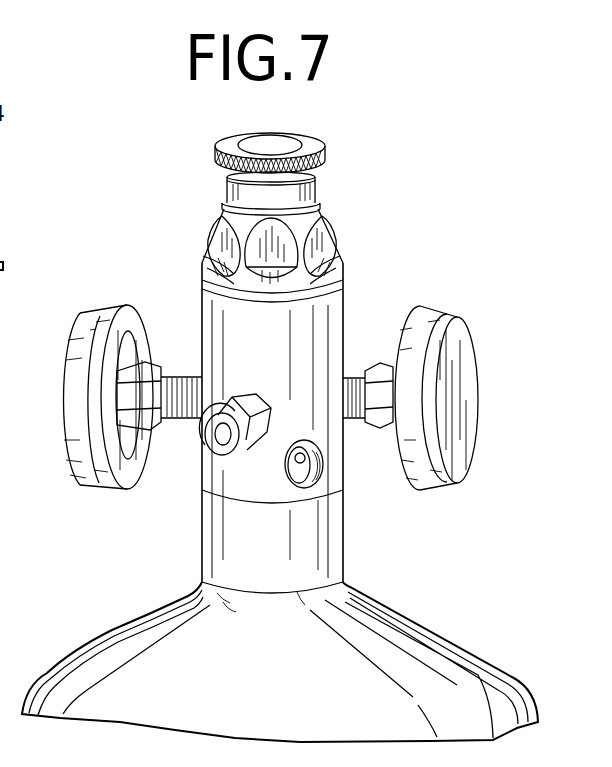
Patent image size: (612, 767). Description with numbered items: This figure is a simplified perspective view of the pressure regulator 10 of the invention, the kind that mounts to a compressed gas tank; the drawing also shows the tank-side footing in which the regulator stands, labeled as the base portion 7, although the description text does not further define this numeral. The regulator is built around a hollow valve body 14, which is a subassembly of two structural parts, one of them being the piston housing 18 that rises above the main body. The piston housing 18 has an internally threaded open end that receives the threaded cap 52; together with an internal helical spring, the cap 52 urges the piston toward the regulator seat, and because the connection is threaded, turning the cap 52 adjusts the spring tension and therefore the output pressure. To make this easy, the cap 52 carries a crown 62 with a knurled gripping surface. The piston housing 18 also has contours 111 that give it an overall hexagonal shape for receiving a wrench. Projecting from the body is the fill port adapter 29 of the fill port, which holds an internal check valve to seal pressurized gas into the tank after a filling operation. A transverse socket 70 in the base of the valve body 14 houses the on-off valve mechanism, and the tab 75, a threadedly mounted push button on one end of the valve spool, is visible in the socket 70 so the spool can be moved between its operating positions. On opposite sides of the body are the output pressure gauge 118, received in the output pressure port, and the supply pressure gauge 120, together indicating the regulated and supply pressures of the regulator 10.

The pressure regulator 10 is at (203, 128).
The threaded cap 52 is at (277, 180).
The crown 62 is at (310, 155).
The piston housing 18 is at (322, 208).
The contours 111 is at (222, 246).
The valve body 14 is at (354, 268).
The supply pressure gauge 120 is at (80, 343).
The output pressure gauge 118 is at (420, 327).
The fill port adapter 29 is at (223, 436).
The transverse socket 70 is at (312, 445).
The tab 75 is at (303, 461).
The base 7 is at (438, 653).